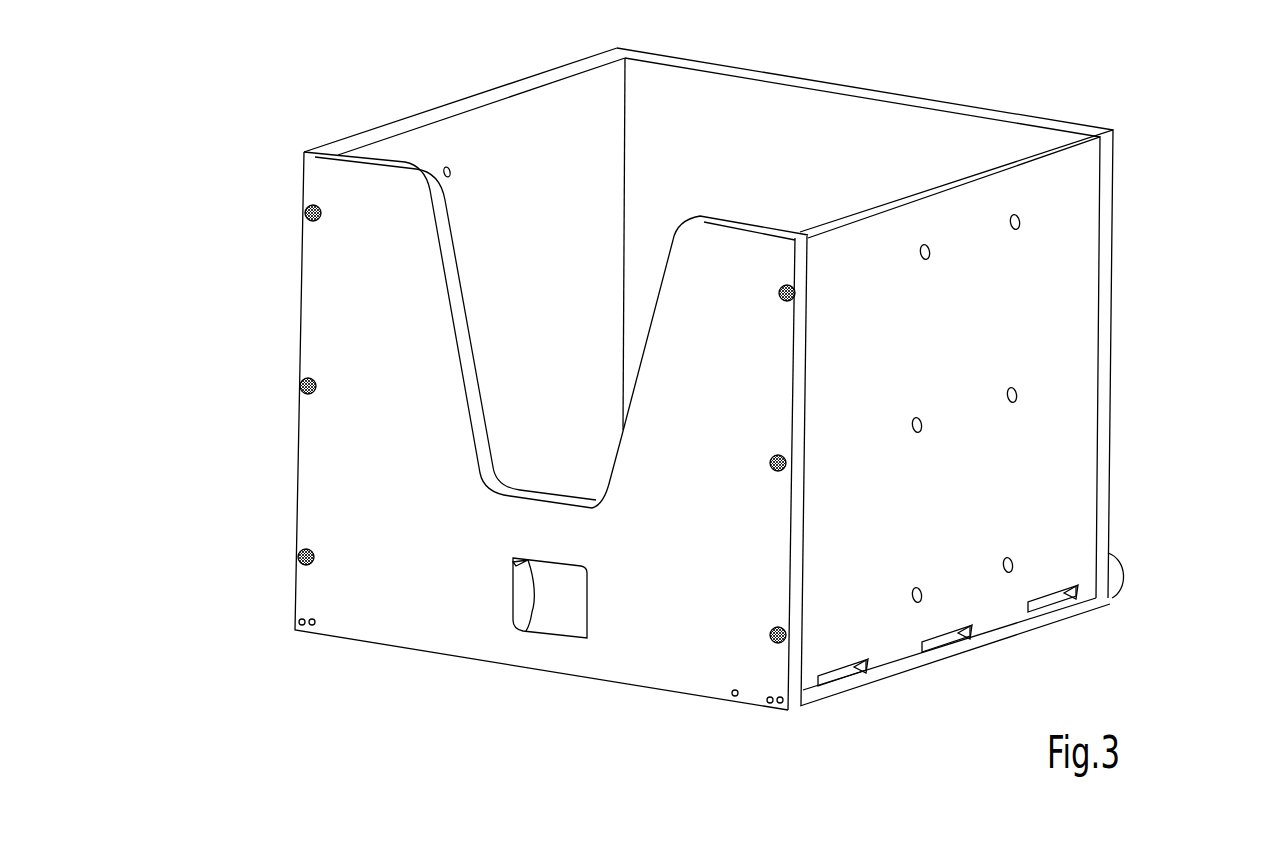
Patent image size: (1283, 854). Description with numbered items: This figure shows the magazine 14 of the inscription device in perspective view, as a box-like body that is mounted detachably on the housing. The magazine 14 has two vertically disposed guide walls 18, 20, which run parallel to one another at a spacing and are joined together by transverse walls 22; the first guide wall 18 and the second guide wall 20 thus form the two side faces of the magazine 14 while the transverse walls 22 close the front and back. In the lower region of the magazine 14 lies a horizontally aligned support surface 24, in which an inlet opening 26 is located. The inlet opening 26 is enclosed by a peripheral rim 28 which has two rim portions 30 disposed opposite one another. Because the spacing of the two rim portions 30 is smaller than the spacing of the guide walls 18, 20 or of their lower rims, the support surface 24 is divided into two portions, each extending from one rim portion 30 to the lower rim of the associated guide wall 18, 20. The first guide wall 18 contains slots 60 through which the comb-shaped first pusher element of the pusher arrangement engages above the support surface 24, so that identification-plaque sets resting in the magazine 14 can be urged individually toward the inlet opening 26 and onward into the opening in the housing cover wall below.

The magazine 14 is at (1150, 190).
The first guide wall 18 is at (1045, 440).
The second guide wall 20 is at (445, 105).
The transverse wall 22 is at (910, 92).
The support surface 24 is at (510, 553).
The inlet opening 26 is at (570, 610).
The peripheral rim 28 is at (526, 631).
The rim portion 30 is at (897, 655).
The slots 60 is at (830, 680).